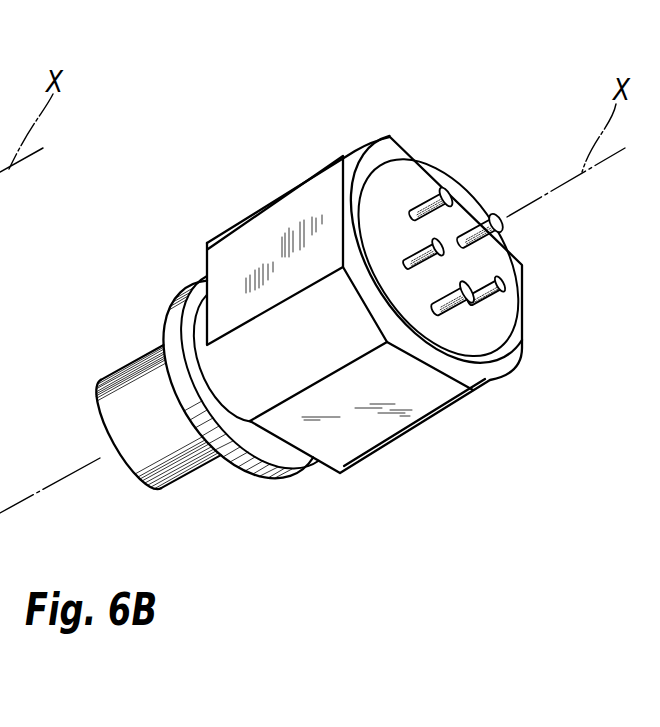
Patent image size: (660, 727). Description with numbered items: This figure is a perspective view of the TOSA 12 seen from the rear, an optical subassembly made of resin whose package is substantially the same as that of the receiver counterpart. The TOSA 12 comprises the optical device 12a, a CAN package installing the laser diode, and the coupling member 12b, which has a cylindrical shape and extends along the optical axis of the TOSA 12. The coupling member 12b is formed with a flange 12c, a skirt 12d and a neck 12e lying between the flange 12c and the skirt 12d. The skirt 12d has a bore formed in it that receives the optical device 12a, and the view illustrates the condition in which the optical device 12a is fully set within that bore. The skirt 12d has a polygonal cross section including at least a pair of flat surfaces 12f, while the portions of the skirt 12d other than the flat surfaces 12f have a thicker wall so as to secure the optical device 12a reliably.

The TOSA 12 is at (422, 106).
The optical device 12a is at (493, 330).
The coupling member 12b is at (448, 577).
The flange 12c is at (233, 453).
The skirt 12d is at (377, 465).
The neck 12e is at (270, 440).
The flat surfaces 12f is at (282, 213).